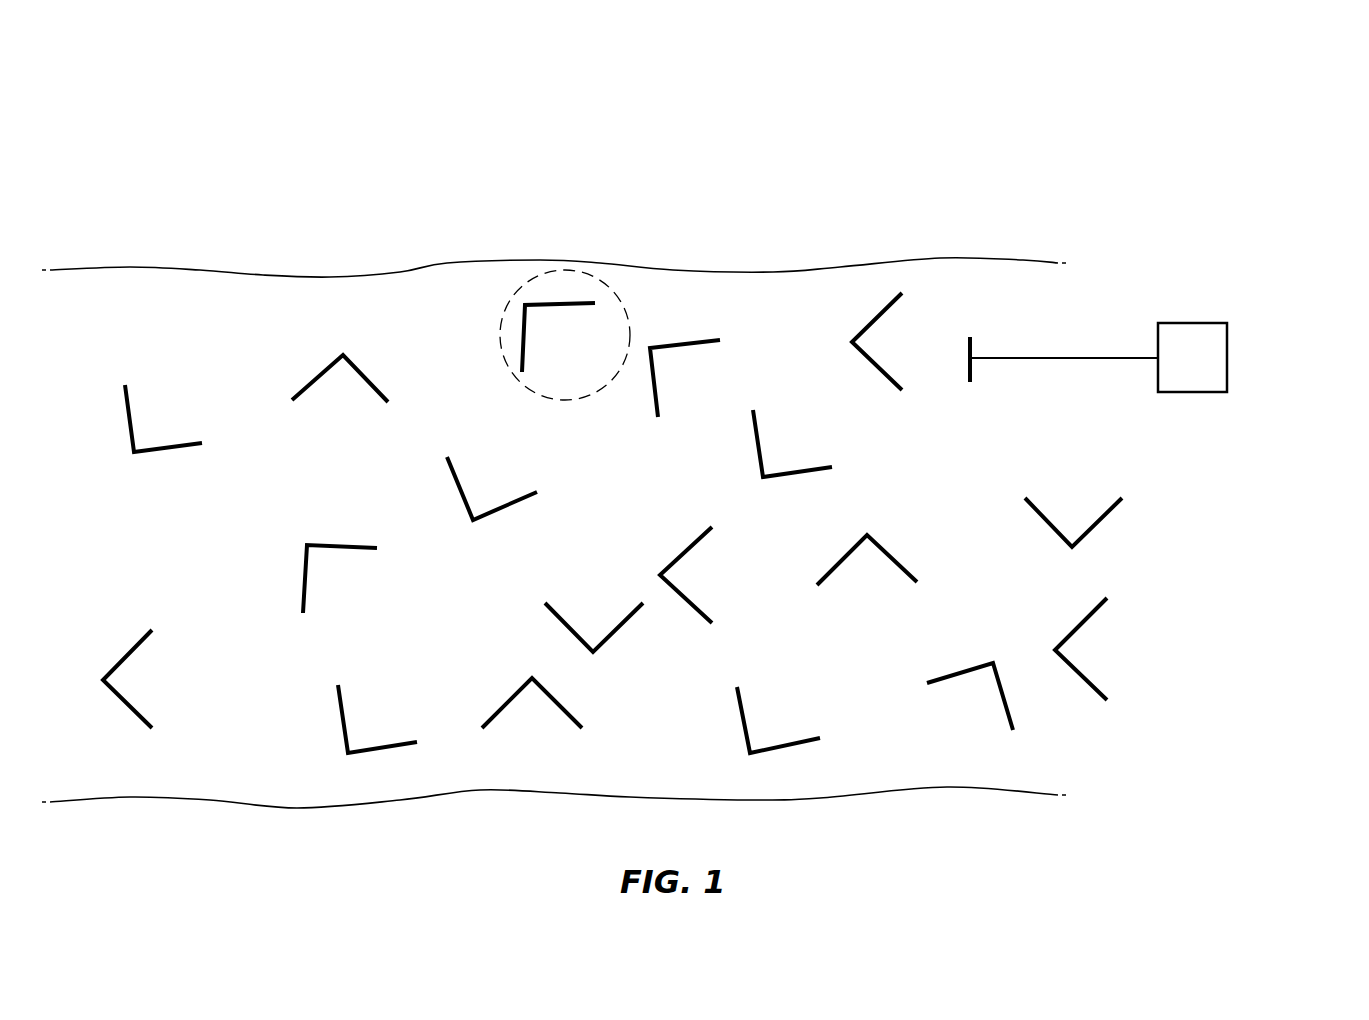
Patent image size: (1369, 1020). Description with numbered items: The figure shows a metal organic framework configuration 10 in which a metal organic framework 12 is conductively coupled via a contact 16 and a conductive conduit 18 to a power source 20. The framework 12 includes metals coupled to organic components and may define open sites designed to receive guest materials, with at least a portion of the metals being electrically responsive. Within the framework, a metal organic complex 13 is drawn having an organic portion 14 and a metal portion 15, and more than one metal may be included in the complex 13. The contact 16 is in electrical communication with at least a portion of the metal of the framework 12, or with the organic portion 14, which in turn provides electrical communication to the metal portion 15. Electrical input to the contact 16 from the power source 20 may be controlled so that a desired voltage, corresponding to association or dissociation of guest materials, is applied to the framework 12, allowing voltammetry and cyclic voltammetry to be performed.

The metal organic framework configuration 10 is at (1243, 120).
The metal organic framework 12 is at (272, 760).
The metal organic complex 13 is at (630, 317).
The organic portion 14 is at (303, 385).
The metal portion 15 is at (142, 355).
The contact 16 is at (973, 348).
The conductive conduit 18 is at (1065, 355).
The power source 20 is at (1217, 363).